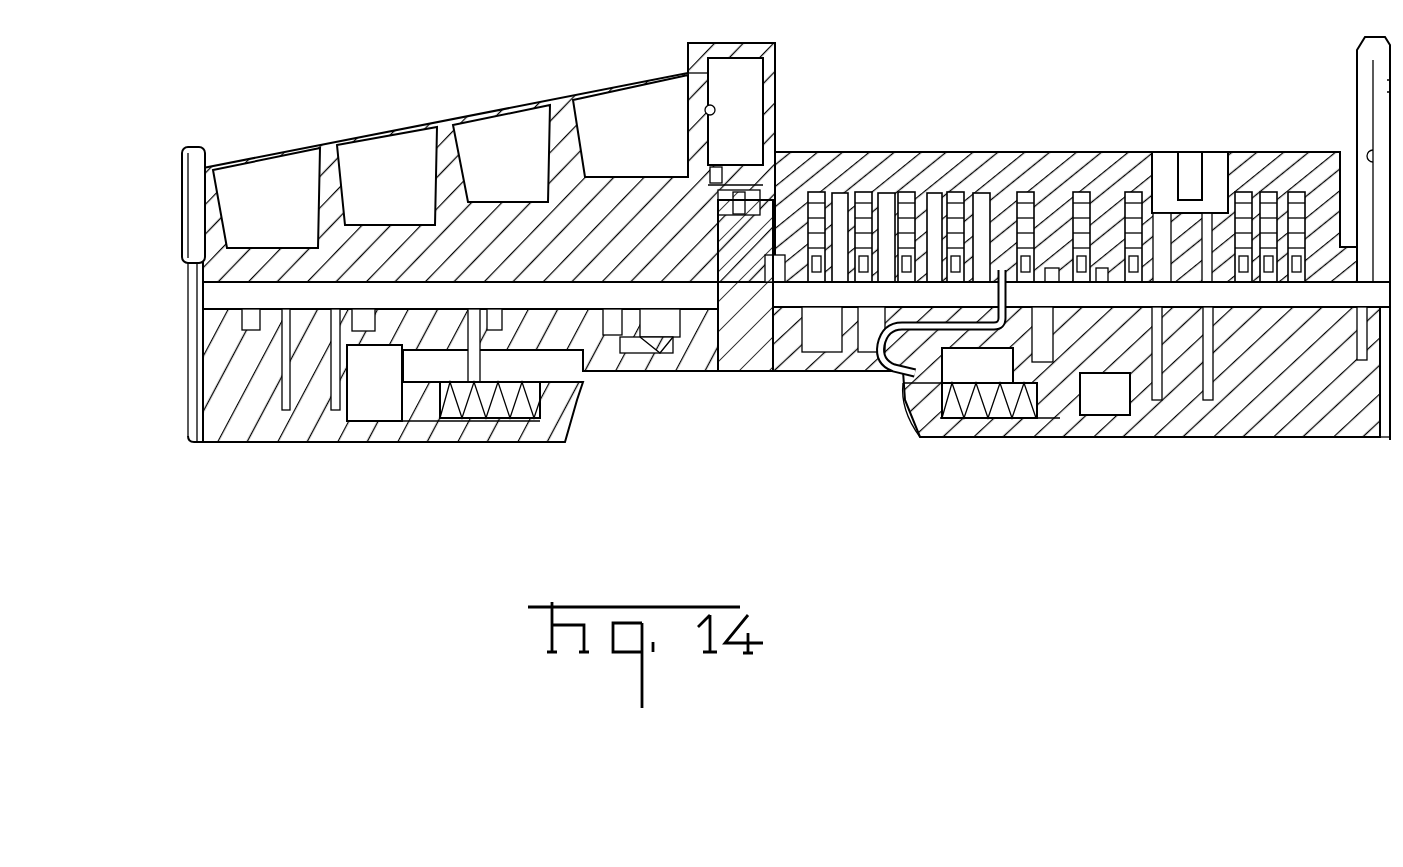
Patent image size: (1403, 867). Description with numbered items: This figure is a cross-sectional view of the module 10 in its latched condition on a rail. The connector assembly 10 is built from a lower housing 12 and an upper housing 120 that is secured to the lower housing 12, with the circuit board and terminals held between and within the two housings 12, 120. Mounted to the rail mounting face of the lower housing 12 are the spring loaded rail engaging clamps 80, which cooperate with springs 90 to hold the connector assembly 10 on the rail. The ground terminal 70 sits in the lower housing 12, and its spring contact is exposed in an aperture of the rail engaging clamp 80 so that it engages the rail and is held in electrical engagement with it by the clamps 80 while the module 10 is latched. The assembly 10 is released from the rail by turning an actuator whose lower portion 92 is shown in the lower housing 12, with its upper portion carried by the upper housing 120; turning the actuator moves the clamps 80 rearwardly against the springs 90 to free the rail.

The connector assembly 10 is at (168, 229).
The lower housing 12 is at (183, 404).
The upper housing 120 is at (177, 146).
The lower portion of actuator 92 is at (729, 378).
The springs 90 is at (432, 410).
The rail engaging clamps 80 is at (505, 450).
The ground terminal 70 is at (874, 378).